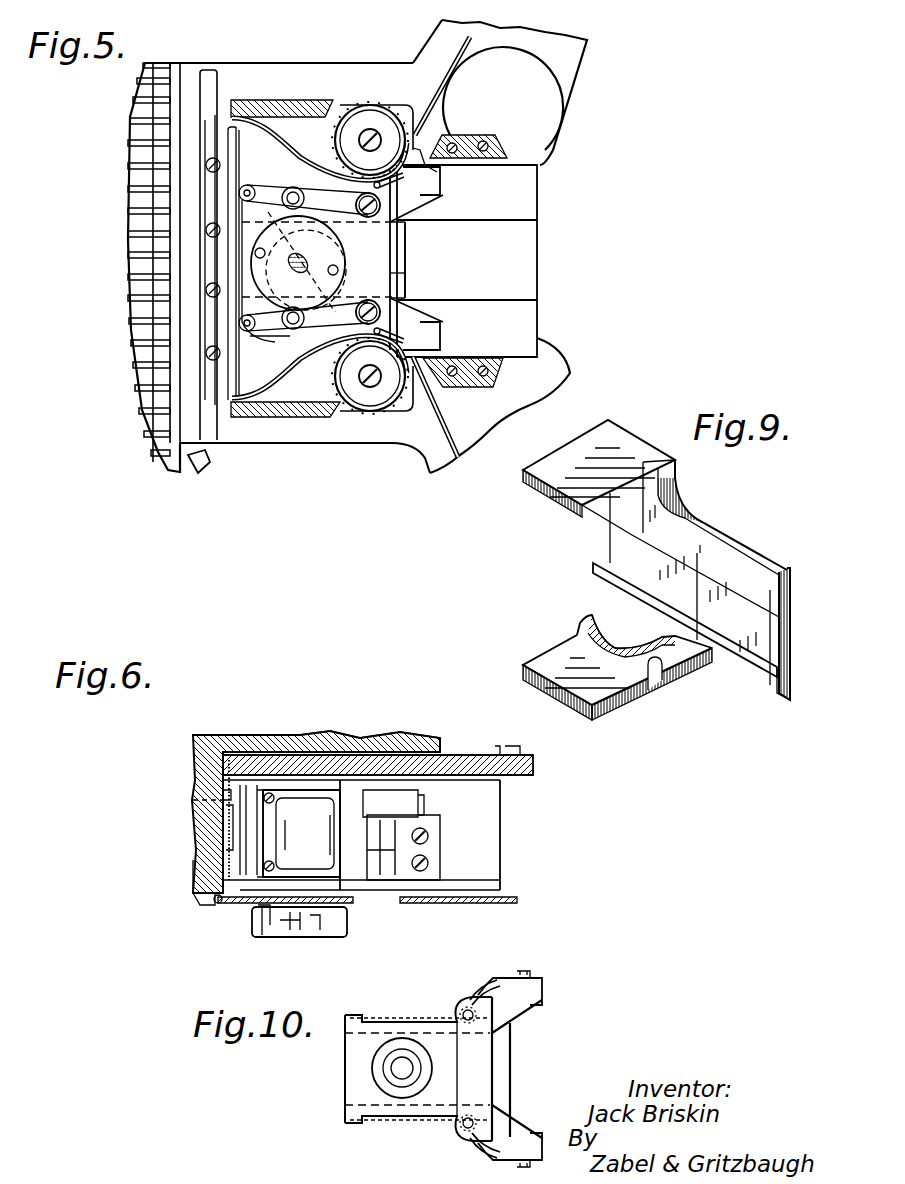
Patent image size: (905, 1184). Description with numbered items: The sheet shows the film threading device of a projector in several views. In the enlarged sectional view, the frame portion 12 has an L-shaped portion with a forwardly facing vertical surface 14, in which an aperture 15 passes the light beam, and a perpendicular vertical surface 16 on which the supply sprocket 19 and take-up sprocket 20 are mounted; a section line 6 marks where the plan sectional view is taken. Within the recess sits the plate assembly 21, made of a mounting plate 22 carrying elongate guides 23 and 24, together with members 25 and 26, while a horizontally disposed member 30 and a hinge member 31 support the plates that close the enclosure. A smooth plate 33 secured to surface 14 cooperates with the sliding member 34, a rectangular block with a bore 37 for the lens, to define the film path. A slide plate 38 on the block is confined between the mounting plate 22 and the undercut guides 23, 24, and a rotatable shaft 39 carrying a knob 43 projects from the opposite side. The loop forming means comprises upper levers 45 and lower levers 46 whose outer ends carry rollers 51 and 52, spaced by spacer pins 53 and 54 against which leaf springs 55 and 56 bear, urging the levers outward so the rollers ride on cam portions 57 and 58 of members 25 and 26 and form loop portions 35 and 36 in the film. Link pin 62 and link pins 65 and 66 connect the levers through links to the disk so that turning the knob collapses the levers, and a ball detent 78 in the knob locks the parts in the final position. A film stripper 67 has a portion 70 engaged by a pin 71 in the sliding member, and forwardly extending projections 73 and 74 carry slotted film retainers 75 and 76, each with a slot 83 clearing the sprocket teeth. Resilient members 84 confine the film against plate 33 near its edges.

In FIG. 5, the section line 6— 6 is at (242, 172).
In FIG. 6, the frame portion 12 is at (363, 735).
In FIG. 6, the forwardly facing vertical surface 14 is at (212, 882).
In FIG. 6, the aperture 15 is at (215, 814).
In FIG. 6, the vertical surface 16 is at (427, 752).
In FIG. 5, the supply sprocket 19 is at (375, 115).
In FIG. 5, the take-up sprocket 20 is at (367, 410).
In FIG. 9, the plate assembly 21 is at (570, 526).
In FIG. 6, the plate assembly 21 is at (487, 748).
In FIG. 9, the mounting plate 22 is at (785, 641).
In FIG. 6, the mounting plate 22 is at (535, 752).
In FIG. 9, the elongate guide 23 is at (781, 580).
In FIG. 6, the elongate guide 23 is at (540, 775).
In FIG. 9, the elongate guide 24 is at (781, 695).
In FIG. 5, the member 25 is at (302, 125).
In FIG. 9, the member 25 is at (583, 447).
In FIG. 5, the member 26 is at (307, 405).
In FIG. 9, the member 26 is at (618, 700).
In FIG. 5, the horizontally disposed member 30 is at (472, 385).
In FIG. 5, the hinge member 31 is at (215, 262).
In FIG. 5, the smooth plate 33 is at (236, 207).
In FIG. 6, the smooth plate 33 is at (228, 797).
In FIG. 5, the sliding member 34 is at (390, 262).
In FIG. 10, the sliding member 34 is at (475, 1057).
In FIG. 5, the loop portion 35 is at (293, 188).
In FIG. 5, the loop portion 36 is at (300, 370).
In FIG. 10, the bore 37 is at (370, 1103).
In FIG. 5, the slide plate 38 is at (400, 232).
In FIG. 10, the slide plate 38 is at (500, 1073).
In FIG. 5, the rotatable shaft 39 is at (292, 270).
In FIG. 6, the knob 43 is at (350, 940).
In FIG. 5, the levers 45 is at (343, 217).
In FIG. 6, the levers 45 is at (298, 787).
In FIG. 5, the levers 46 is at (262, 330).
In FIG. 5, the roller 51 is at (250, 188).
In FIG. 6, the roller 51 is at (258, 790).
In FIG. 5, the roller 52 is at (270, 355).
In FIG. 5, the spacer pin 53 is at (345, 202).
In FIG. 6, the spacer pin 53 is at (336, 801).
In FIG. 5, the spacer pin 54 is at (343, 312).
In FIG. 6, the leaf spring 55 is at (305, 833).
In FIG. 5, the leaf spring 56 is at (338, 310).
In FIG. 5, the cam portion 57 is at (268, 112).
In FIG. 9, the cam portion 57 is at (612, 505).
In FIG. 5, the cam portion 58 is at (280, 398).
In FIG. 9, the cam portion 58 is at (580, 624).
In FIG. 5, the link pin 62 is at (293, 328).
In FIG. 5, the link pin 65 is at (262, 252).
In FIG. 5, the link pin 66 is at (385, 274).
In FIG. 5, the film stripper 67 is at (393, 108).
In FIG. 6, the portion 70 is at (405, 798).
In FIG. 6, the pin 71 is at (425, 808).
In FIG. 5, the forwardly extending projection 73 is at (440, 184).
In FIG. 10, the forwardly extending projection 73 is at (535, 996).
In FIG. 5, the forwardly extending projection 74 is at (442, 332).
In FIG. 10, the forwardly extending projection 74 is at (527, 1140).
In FIG. 5, the film retainer 75 is at (398, 180).
In FIG. 6, the film retainer 75 is at (435, 868).
In FIG. 10, the film retainer 75 is at (478, 992).
In FIG. 5, the film retainer 76 is at (440, 318).
In FIG. 10, the film retainer 76 is at (488, 1153).
In FIG. 6, the ball detent 78 is at (257, 914).
In FIG. 6, the slot 83 is at (400, 848).
In FIG. 6, the resilient members 84 is at (229, 847).